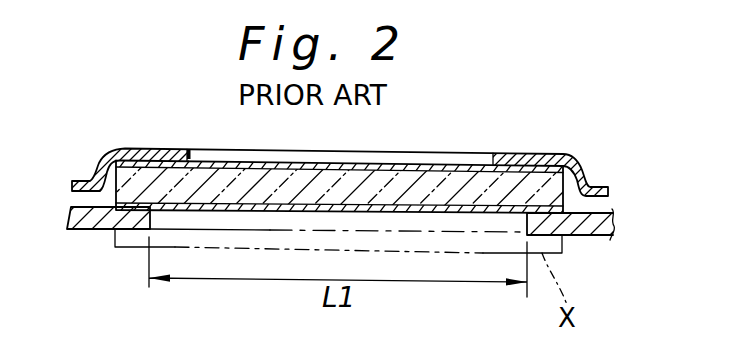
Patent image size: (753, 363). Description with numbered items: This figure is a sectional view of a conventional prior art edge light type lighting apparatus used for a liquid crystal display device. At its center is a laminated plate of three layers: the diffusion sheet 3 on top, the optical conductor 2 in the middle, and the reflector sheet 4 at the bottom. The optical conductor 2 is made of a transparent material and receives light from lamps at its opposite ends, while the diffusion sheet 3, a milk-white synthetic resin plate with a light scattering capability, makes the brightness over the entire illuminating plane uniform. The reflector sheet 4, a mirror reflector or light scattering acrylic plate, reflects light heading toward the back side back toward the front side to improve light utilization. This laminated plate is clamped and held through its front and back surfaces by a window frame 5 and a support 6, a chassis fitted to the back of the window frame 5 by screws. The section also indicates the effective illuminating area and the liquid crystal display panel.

The optical conductor 2 is at (543, 160).
The diffusion sheet 3 is at (413, 208).
The reflector sheet 4 is at (217, 163).
The window frame 5 is at (93, 232).
The support 6 is at (119, 148).